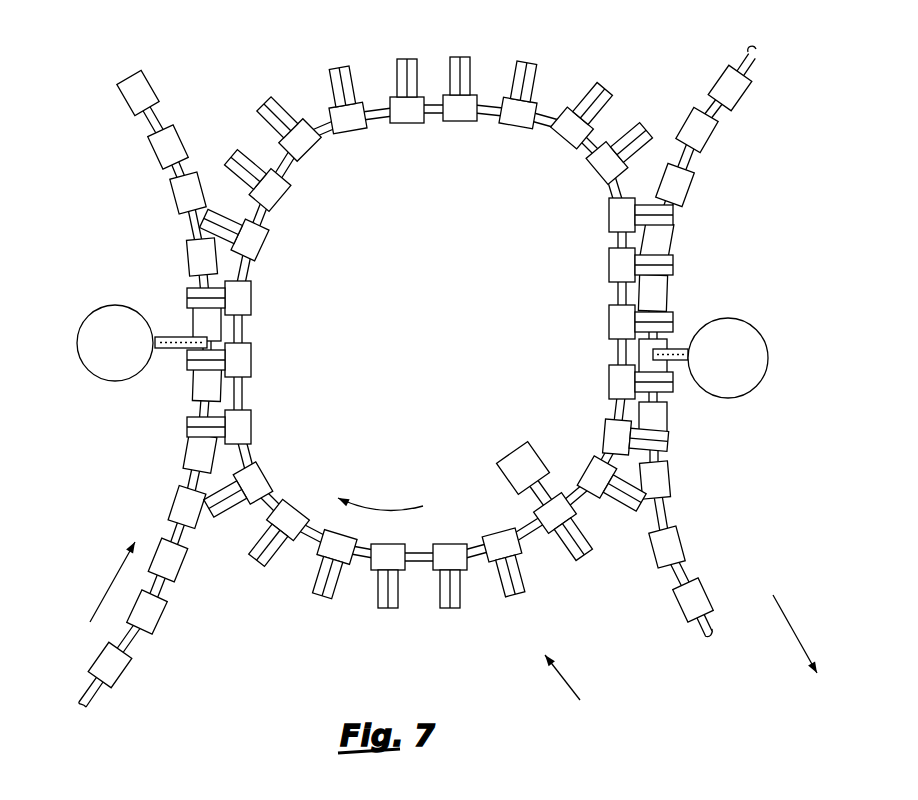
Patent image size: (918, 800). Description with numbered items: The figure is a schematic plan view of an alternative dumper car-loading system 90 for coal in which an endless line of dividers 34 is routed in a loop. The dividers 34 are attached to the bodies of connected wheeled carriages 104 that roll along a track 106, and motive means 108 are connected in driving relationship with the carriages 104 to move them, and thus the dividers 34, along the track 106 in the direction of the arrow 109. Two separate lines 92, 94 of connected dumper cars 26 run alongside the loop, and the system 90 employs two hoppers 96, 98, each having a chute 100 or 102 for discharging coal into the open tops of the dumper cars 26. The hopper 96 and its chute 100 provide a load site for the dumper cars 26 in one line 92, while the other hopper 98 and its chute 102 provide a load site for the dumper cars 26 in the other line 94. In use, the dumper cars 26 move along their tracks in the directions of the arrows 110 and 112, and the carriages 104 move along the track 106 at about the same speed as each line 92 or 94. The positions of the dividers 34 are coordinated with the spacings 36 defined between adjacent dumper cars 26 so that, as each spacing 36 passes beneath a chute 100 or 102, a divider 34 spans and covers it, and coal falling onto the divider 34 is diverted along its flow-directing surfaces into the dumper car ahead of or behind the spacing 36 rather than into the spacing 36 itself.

The dumper car 26 is at (413, 383).
The divider 34 is at (453, 63).
The spacing 36 is at (183, 490).
The dumper car-loading system 90 is at (566, 692).
The first line of dumper cars 92 is at (123, 675).
The second line of dumper cars 94 is at (682, 615).
The hopper 96 is at (98, 383).
The hopper 98 is at (767, 372).
The chute 100 is at (178, 332).
The chute 102 is at (680, 348).
The wheeled carriage 104 is at (430, 332).
The track 106 is at (520, 520).
The motive means 108 is at (507, 457).
The arrow 109 is at (382, 508).
The arrow 110 is at (120, 565).
The arrow 112 is at (795, 640).